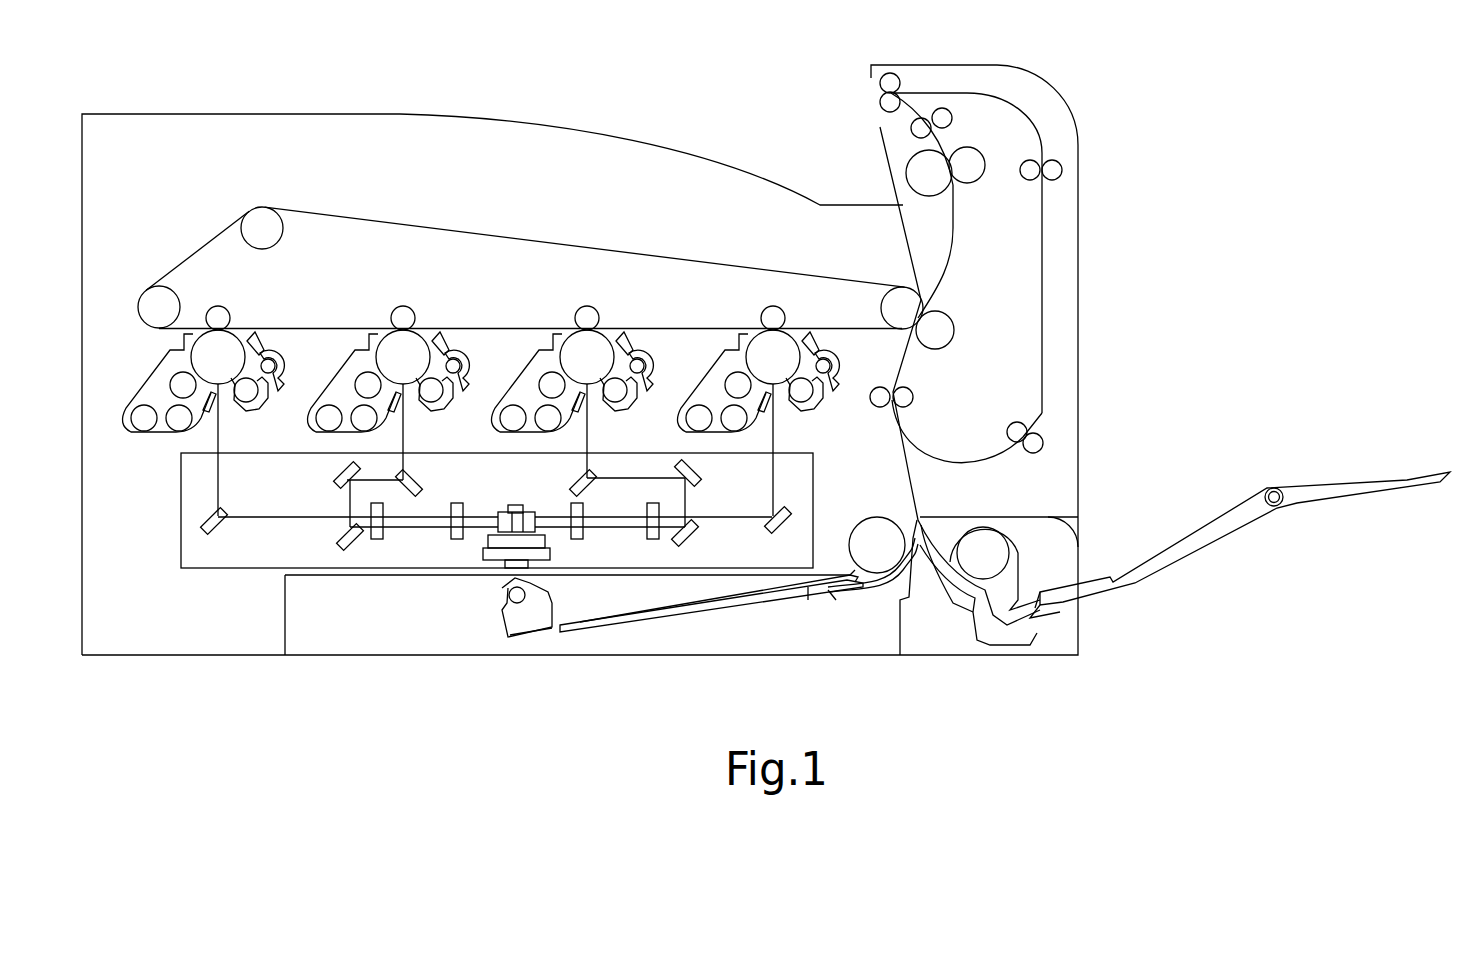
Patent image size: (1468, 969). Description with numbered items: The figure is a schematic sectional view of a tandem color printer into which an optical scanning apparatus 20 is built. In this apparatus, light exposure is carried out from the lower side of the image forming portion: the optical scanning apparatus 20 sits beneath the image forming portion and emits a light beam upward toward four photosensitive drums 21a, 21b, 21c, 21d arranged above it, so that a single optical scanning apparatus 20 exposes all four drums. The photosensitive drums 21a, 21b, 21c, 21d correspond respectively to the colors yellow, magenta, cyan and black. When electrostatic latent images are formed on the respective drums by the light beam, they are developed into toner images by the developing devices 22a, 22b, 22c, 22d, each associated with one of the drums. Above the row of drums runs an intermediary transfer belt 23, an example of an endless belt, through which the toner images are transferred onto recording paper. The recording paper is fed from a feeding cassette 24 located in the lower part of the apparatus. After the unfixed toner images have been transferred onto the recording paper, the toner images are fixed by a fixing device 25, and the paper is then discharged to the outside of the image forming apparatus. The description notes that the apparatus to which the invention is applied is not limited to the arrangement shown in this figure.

The optical scanning apparatus 20 is at (181, 553).
The photosensitive drum 21a is at (192, 352).
The photosensitive drum 21b is at (428, 332).
The photosensitive drum 21c is at (610, 332).
The photosensitive drum 21d is at (798, 336).
The developing device 22a is at (152, 448).
The developing device 22b is at (306, 412).
The developing device 22c is at (492, 412).
The developing device 22d is at (678, 412).
The intermediary transfer belt 23 is at (198, 248).
The feeding cassette 24 is at (877, 637).
The fixing device 25 is at (966, 163).